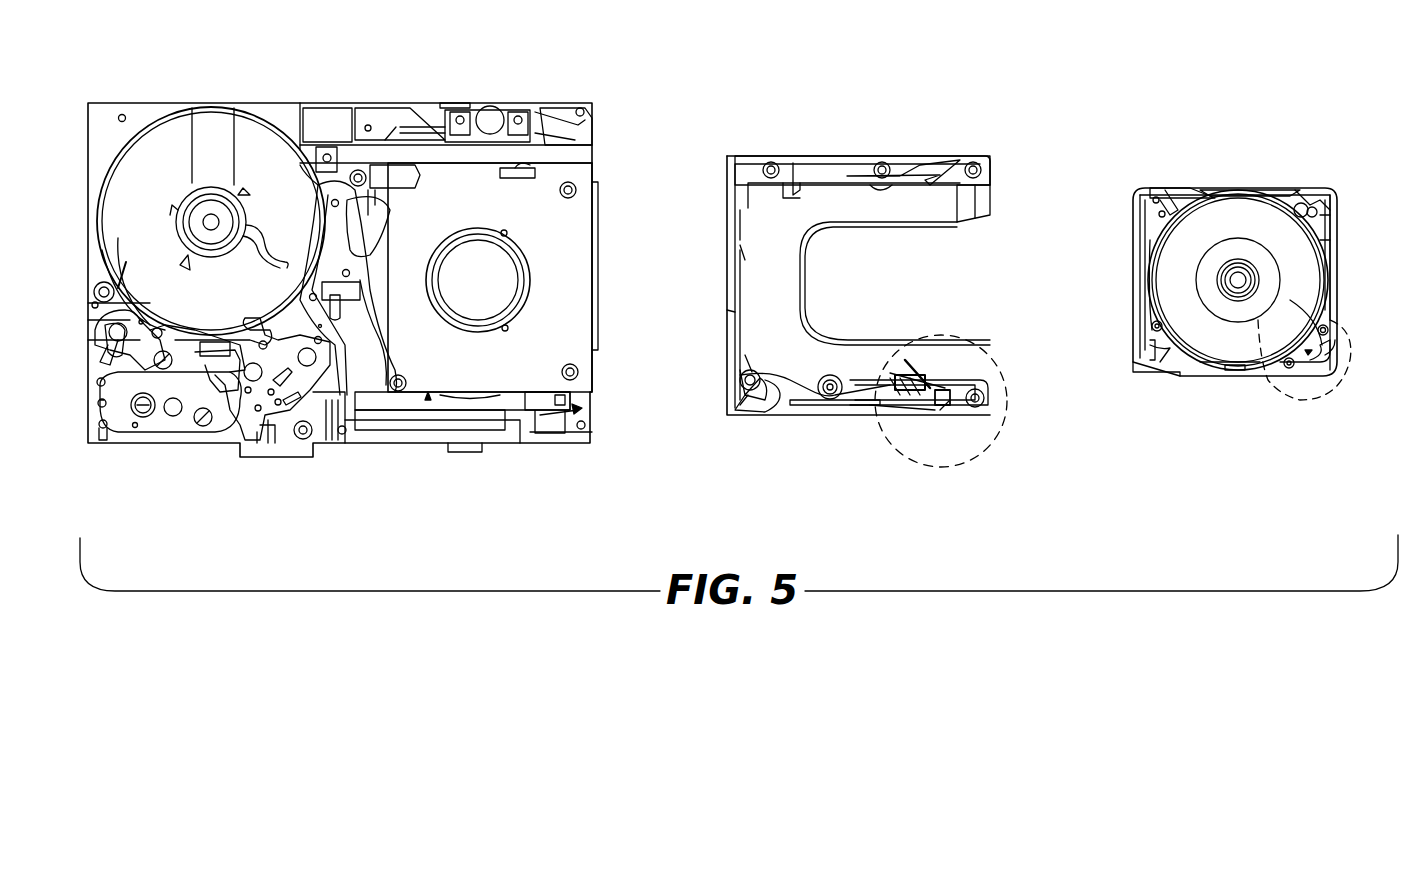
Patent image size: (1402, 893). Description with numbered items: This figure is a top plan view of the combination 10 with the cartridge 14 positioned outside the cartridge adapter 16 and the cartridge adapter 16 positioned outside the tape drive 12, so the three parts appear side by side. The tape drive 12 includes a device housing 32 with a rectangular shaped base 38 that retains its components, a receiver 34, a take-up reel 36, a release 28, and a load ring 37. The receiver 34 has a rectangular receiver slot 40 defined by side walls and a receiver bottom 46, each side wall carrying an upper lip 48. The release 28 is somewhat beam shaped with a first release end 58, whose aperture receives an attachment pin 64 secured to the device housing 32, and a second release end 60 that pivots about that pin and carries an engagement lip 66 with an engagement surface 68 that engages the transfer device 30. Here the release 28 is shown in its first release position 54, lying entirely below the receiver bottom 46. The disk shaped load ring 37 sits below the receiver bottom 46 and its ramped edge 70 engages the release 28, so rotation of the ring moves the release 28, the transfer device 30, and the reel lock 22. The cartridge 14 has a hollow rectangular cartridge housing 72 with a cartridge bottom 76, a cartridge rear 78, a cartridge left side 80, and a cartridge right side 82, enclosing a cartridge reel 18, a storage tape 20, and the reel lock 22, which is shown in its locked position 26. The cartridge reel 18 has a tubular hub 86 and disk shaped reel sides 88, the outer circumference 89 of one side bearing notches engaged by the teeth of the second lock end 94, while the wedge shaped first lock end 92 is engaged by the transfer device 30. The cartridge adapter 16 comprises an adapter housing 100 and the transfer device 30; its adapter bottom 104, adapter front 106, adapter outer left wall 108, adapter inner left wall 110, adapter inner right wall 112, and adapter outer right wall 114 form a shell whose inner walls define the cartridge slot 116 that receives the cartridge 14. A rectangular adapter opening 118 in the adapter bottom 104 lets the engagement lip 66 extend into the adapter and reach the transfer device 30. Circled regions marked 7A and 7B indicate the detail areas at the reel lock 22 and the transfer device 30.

The tape drive system 10 is at (700, 95).
The tape drive 12 is at (326, 100).
The cartridge 14 is at (1235, 178).
The cartridge adapter 16 is at (1268, 220).
The cartridge reel 18 is at (853, 142).
The storage tape 20 is at (1143, 265).
The reel lock 22 is at (1318, 365).
The locked position 26 is at (1330, 362).
The release 28 is at (430, 400).
The transfer device 30 is at (905, 420).
The device housing 32 is at (230, 102).
The receiver 34 is at (549, 178).
The take-up reel 36 is at (165, 147).
The load ring 37 is at (352, 390).
The base 38 is at (113, 110).
The receiver slot 40 is at (565, 238).
The receiver bottom 46 is at (458, 185).
The upper lip 48 is at (410, 157).
The first release position 54 is at (565, 425).
The first release end 58 is at (350, 435).
The second release end 60 is at (565, 430).
The attachment pin 64 is at (360, 375).
The engagement lip 66 is at (588, 412).
The engagement surface 68 is at (535, 420).
The ramped edge 70 is at (470, 396).
The cartridge housing 72 is at (1203, 182).
The cartridge bottom 76 is at (1300, 192).
The cartridge rear 78 is at (1337, 208).
The cartridge left side 80 is at (1185, 378).
The cartridge right side 82 is at (1222, 188).
The hub 86 is at (1215, 290).
The reel sides 88 is at (1230, 365).
The outer circumference 89 is at (1232, 370).
The first lock end 92 is at (1262, 372).
The second lock end 94 is at (1320, 345).
The adapter housing 100 is at (806, 155).
The adapter bottom 104 is at (950, 170).
The adapter front 106 is at (748, 385).
The adapter outer left wall 108 is at (828, 410).
The adapter inner left wall 110 is at (825, 382).
The adapter inner right wall 112 is at (890, 165).
The adapter outer right wall 114 is at (838, 155).
The cartridge slot 116 is at (948, 282).
The adapter opening 118 is at (943, 405).
The detail view 7A is at (1350, 430).
The detail view 7B is at (940, 470).